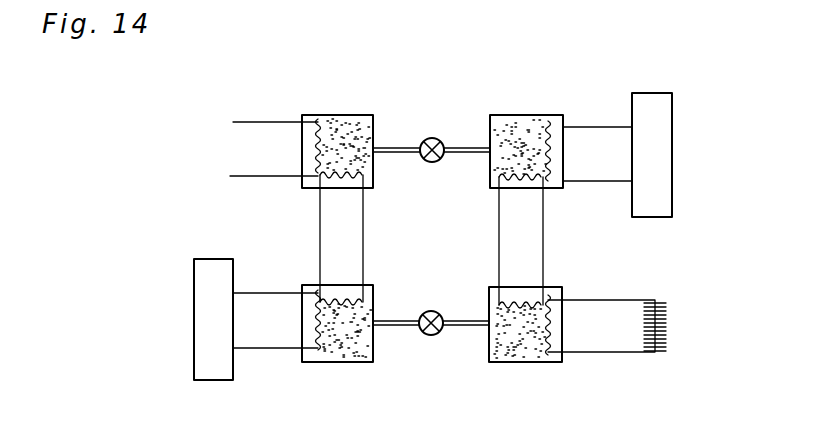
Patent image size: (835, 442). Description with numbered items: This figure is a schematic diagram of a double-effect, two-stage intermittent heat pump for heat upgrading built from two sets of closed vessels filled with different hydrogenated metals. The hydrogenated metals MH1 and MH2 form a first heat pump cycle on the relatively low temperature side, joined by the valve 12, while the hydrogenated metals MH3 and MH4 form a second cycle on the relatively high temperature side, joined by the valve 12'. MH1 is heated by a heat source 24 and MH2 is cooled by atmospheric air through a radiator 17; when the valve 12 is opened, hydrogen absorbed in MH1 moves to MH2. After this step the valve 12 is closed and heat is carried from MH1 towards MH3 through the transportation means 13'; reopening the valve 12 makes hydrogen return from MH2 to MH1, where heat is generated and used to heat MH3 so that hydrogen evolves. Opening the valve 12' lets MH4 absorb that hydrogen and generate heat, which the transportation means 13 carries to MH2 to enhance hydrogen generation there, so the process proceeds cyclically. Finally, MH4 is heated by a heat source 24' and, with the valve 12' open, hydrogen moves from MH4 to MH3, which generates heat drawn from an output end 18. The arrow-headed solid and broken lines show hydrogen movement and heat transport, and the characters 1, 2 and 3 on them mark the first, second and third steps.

The hydrogenated metal MH1 is at (340, 356).
The hydrogenated metal MH2 is at (522, 357).
The hydrogenated metal MH3 is at (350, 123).
The hydrogenated metal MH4 is at (527, 123).
The valve 12 is at (431, 299).
The valve 12' is at (431, 125).
The transportation means 13 is at (550, 241).
The transportation means 13' is at (374, 238).
The radiator 17 is at (655, 301).
The output end 18 is at (236, 122).
The heat source 24 is at (256, 342).
The heat source 24' is at (642, 138).
The first step 1 is at (445, 347).
The second step 2 is at (445, 173).
The third step 3 is at (282, 150).